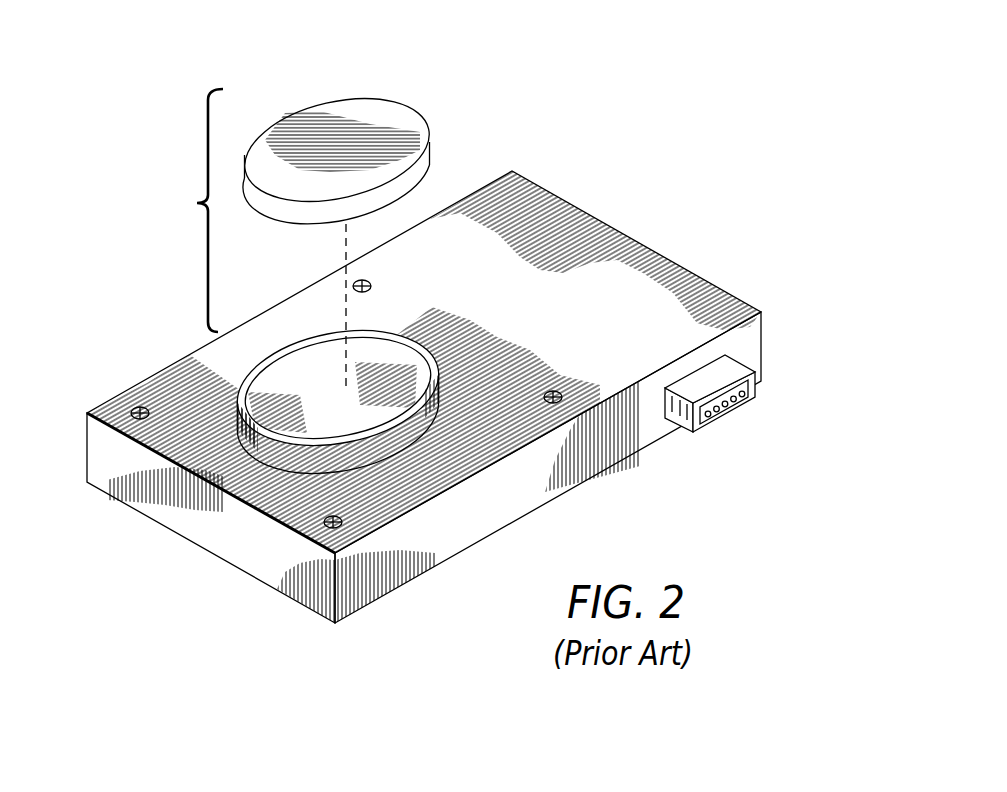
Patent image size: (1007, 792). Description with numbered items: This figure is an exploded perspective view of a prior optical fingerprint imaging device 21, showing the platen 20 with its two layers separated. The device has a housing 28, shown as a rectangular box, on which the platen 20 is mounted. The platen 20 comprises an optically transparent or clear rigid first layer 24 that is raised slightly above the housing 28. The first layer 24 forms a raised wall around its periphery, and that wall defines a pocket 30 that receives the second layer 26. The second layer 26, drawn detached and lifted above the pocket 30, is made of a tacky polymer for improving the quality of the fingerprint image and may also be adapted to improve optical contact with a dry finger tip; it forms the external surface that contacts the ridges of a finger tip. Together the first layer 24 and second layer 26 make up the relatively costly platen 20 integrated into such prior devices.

The platen 20 is at (258, 238).
The prior fingerprint imaging device 21 is at (416, 397).
The first layer 24 is at (280, 403).
The second layer 26 is at (360, 113).
The housing 28 is at (200, 517).
The pocket 30 is at (287, 372).